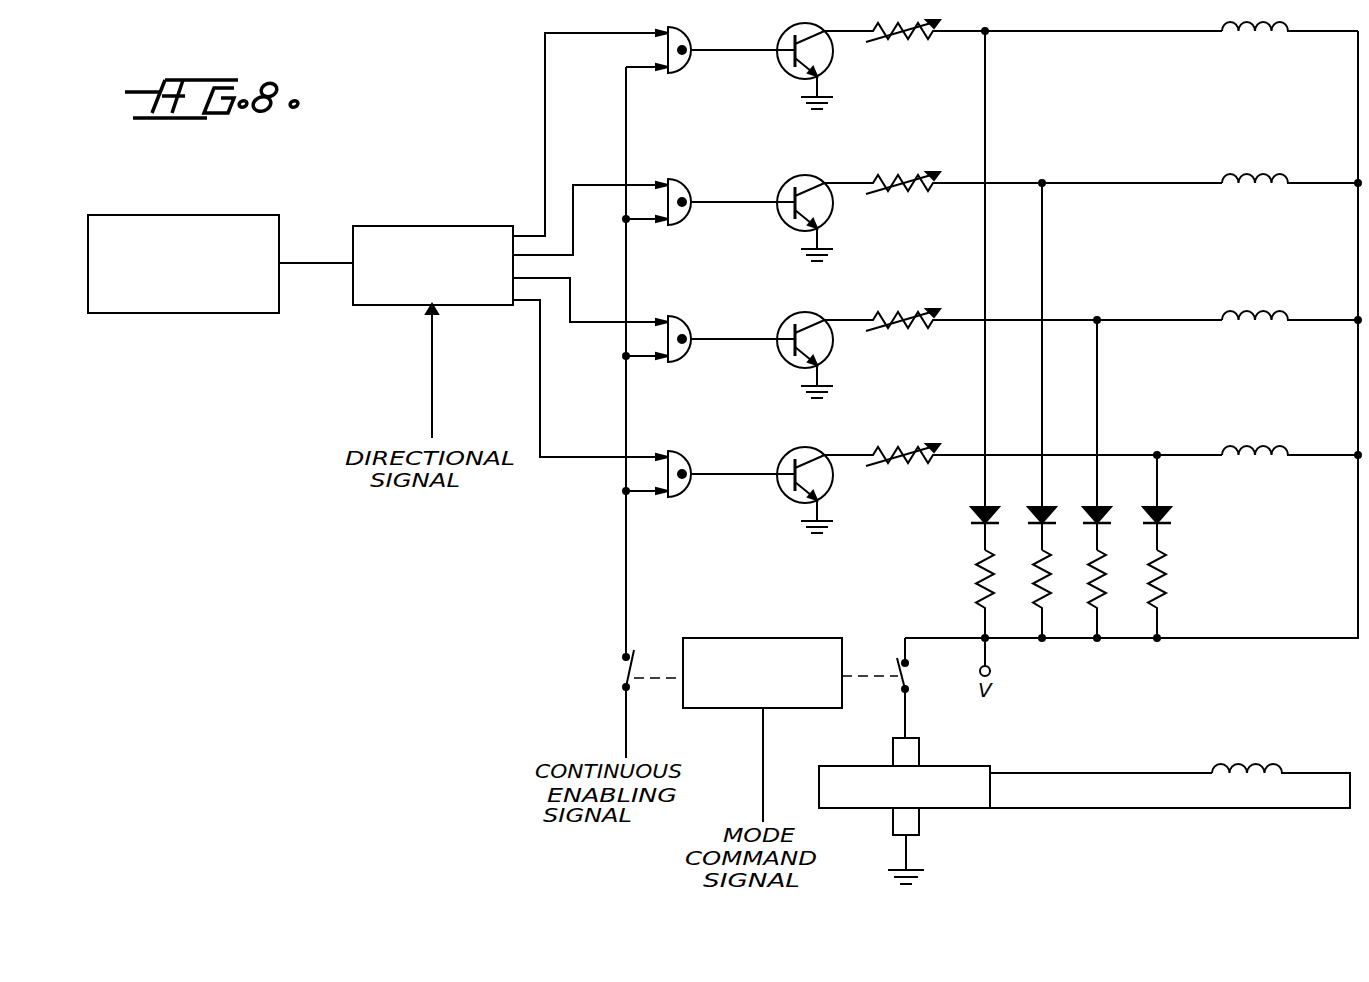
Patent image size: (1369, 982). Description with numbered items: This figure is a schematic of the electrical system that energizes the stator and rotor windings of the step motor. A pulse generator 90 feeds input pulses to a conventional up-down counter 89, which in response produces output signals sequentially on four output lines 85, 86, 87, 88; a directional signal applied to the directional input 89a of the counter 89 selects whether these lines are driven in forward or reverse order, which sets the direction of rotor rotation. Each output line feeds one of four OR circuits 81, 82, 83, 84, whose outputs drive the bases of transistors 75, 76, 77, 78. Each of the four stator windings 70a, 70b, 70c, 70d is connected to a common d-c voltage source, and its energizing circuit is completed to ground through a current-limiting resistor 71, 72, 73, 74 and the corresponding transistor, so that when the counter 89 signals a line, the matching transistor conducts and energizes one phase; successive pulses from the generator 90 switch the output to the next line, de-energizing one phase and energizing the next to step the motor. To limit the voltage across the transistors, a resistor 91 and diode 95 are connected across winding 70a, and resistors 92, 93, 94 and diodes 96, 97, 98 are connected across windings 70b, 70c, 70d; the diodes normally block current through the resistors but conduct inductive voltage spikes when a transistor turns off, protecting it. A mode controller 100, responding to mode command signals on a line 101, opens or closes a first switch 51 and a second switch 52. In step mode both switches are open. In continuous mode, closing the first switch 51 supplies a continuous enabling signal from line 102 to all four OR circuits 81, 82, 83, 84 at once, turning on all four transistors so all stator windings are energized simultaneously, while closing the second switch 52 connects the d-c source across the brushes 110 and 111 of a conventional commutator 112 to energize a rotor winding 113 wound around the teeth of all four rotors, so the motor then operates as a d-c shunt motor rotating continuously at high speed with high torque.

The pulse generator 90 is at (213, 215).
The up-down counter 89 is at (446, 226).
The directional input 89a is at (433, 372).
The output line 85 is at (605, 13).
The output line 86 is at (594, 182).
The output line 87 is at (597, 316).
The output line 88 is at (582, 450).
The OR circuit 81 is at (690, 74).
The OR circuit 82 is at (685, 225).
The OR circuit 83 is at (686, 362).
The OR circuit 84 is at (685, 497).
The transistor 75 is at (785, 36).
The transistor 76 is at (796, 182).
The transistor 77 is at (790, 320).
The transistor 78 is at (783, 461).
The current-limiting resistor 71 is at (905, 40).
The current-limiting resistor 72 is at (905, 192).
The current-limiting resistor 73 is at (905, 329).
The current-limiting resistor 74 is at (895, 464).
The stator winding 70a is at (1250, 40).
The stator winding 70b is at (1250, 192).
The stator winding 70c is at (1250, 329).
The stator winding 70d is at (1248, 464).
The diode 95 is at (975, 504).
The diode 96 is at (1040, 502).
The diode 97 is at (1096, 502).
The diode 98 is at (1155, 502).
The resistor 91 is at (975, 583).
The resistor 92 is at (1033, 582).
The resistor 93 is at (1088, 582).
The resistor 94 is at (1148, 582).
The switch S1 51 is at (622, 680).
The switch S2 52 is at (894, 696).
The mode controller 100 is at (801, 638).
The line 101 is at (762, 746).
The line 102 is at (625, 724).
The brush 110 is at (919, 746).
The brush 111 is at (919, 830).
The commutator 112 is at (968, 808).
The rotor winding 113 is at (1245, 770).